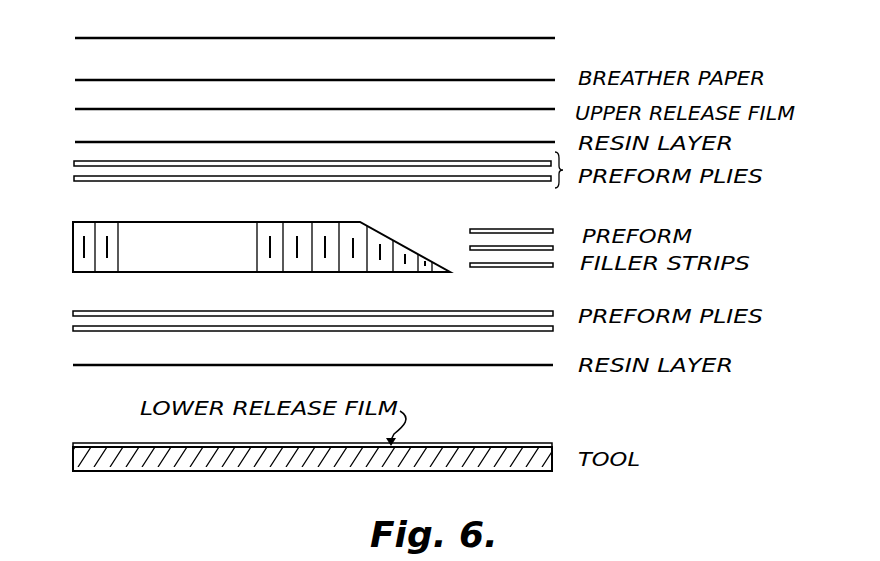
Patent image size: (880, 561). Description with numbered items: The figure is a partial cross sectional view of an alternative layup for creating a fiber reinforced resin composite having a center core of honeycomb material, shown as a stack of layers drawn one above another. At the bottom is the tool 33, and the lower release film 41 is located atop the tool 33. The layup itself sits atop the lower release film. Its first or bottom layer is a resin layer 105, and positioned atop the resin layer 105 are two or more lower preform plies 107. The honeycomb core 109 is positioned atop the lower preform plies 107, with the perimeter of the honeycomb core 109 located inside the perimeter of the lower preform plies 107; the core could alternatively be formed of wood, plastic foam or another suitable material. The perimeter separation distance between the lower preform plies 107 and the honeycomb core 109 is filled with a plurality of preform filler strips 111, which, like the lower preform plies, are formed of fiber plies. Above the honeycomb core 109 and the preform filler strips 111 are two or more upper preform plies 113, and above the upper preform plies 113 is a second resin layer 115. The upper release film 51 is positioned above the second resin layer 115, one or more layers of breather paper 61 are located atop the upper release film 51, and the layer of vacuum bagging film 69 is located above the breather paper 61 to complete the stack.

The vacuum bagging film 69 is at (463, 39).
The breather paper 61 is at (470, 80).
The upper release film 51 is at (462, 110).
The second resin layer 115 is at (455, 143).
The upper preform plies 113 is at (73, 161).
The honeycomb core 109 is at (290, 222).
The preform filler strips 111 is at (470, 231).
The lower preform plies 107 is at (468, 312).
The resin layer 105 is at (508, 366).
The lower release film 41 is at (437, 443).
The tool 33 is at (363, 463).